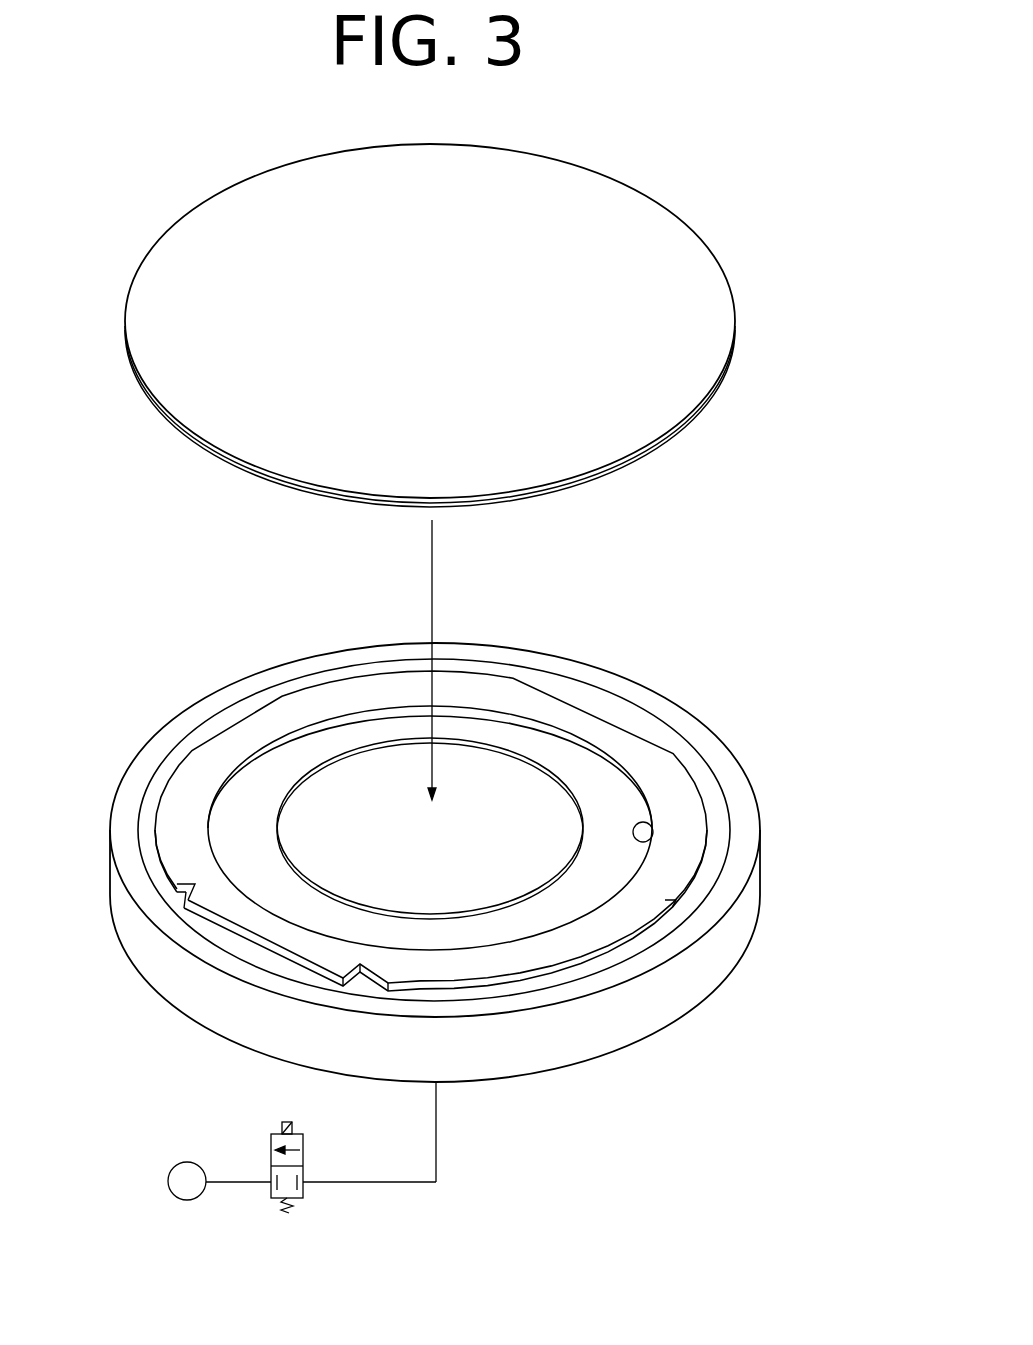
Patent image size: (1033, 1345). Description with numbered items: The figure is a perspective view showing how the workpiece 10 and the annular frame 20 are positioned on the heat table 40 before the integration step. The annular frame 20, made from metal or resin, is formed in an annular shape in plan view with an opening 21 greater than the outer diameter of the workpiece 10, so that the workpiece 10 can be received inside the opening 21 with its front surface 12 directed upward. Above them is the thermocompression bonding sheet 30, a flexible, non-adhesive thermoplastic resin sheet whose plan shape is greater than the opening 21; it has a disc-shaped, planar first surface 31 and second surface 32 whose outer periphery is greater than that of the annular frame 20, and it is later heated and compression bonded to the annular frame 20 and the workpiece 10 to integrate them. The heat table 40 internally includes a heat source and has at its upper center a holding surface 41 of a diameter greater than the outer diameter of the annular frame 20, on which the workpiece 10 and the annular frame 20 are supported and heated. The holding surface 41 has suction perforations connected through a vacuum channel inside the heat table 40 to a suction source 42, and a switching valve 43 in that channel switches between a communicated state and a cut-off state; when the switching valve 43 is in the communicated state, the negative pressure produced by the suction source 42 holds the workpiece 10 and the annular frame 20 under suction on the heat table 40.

The workpiece 10 is at (455, 876).
The front surface 12 is at (478, 885).
The annular frame 20 is at (677, 790).
The opening 21 is at (657, 820).
The thermocompression bonding sheet 30 is at (449, 324).
The first surface 31 is at (598, 478).
The second surface 32 is at (565, 185).
The heat table 40 is at (205, 683).
The holding surface 41 is at (248, 805).
The suction source 42 is at (167, 1181).
The switching valve 43 is at (319, 1208).